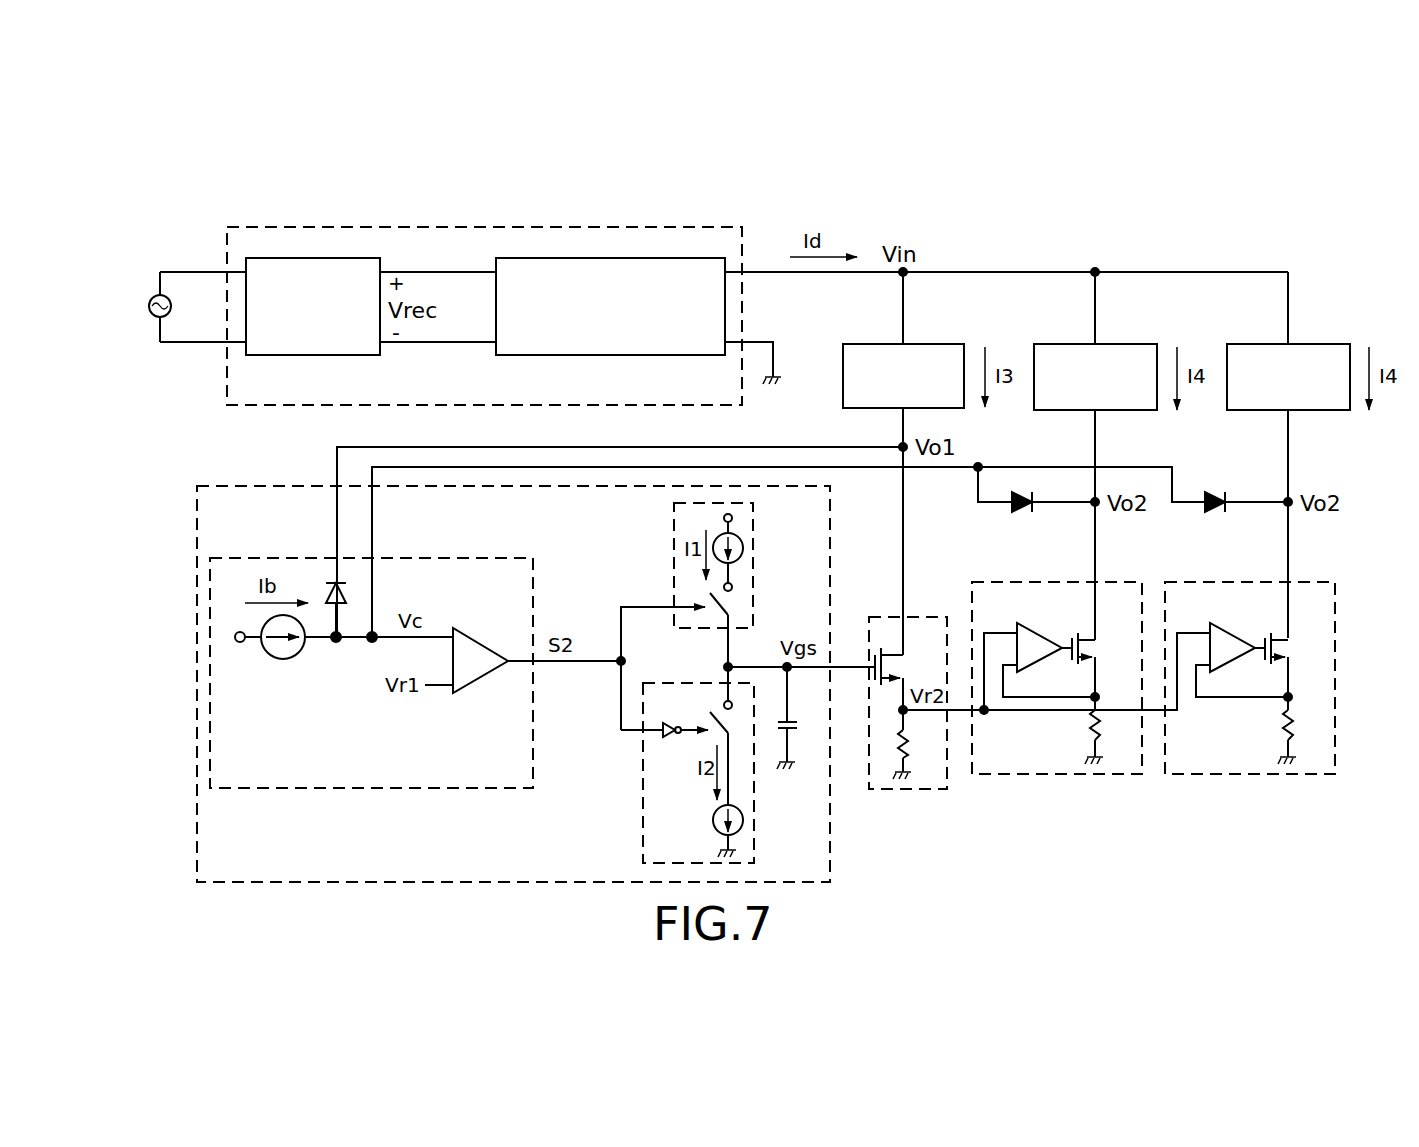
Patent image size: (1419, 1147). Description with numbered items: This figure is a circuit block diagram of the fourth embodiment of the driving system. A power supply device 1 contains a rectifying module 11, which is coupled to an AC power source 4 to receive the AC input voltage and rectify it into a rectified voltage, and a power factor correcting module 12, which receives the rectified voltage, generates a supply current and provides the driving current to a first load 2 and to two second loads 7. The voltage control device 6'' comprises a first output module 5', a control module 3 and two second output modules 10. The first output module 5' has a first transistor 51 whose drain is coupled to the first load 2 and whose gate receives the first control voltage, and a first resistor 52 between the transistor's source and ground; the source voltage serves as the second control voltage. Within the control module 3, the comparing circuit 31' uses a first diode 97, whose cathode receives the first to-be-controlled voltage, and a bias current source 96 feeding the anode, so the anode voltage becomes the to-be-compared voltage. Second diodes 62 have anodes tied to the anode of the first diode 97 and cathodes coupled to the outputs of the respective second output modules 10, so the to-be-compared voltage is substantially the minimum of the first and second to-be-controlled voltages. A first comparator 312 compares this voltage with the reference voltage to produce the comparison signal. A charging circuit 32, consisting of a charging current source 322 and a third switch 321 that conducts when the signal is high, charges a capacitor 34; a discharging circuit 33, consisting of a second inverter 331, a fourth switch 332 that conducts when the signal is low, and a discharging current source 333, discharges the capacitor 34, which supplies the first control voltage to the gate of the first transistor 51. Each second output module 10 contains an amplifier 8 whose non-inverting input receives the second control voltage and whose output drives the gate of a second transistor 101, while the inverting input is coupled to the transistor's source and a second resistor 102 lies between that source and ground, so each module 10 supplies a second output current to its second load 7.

The power supply device 1 is at (450, 227).
The rectifying module 11 is at (312, 258).
The power factor correcting module 12 is at (608, 258).
The AC power source 4 is at (155, 295).
The first load 2 is at (938, 344).
The second load 7 is at (1130, 344).
The second diode 62 is at (1030, 508).
The control module 3 is at (218, 486).
The comparing circuit 31' is at (336, 655).
The first diode 97 is at (330, 583).
The bias current source 96 is at (275, 660).
The first comparator 312 is at (476, 690).
The charging circuit 32 is at (755, 507).
The charging current source 322 is at (745, 548).
The third switch 321 is at (738, 600).
The capacitor 34 is at (795, 730).
The discharging circuit 33 is at (643, 805).
The second inverter 331 is at (662, 728).
The fourth switch 332 is at (718, 728).
The discharging current source 333 is at (712, 818).
The first output module 5' is at (908, 747).
The first transistor 51 is at (893, 653).
The first resistor 52 is at (898, 740).
The second output module 10 is at (1006, 775).
The second transistor 101 is at (1085, 635).
The amplifier 8 is at (1035, 668).
The second resistor 102 is at (1090, 735).
The voltage control device 6'' is at (1170, 893).